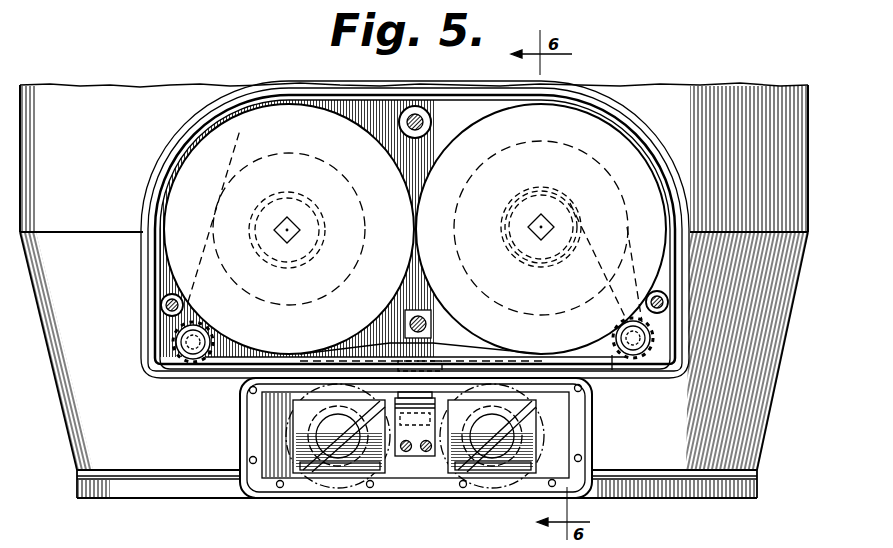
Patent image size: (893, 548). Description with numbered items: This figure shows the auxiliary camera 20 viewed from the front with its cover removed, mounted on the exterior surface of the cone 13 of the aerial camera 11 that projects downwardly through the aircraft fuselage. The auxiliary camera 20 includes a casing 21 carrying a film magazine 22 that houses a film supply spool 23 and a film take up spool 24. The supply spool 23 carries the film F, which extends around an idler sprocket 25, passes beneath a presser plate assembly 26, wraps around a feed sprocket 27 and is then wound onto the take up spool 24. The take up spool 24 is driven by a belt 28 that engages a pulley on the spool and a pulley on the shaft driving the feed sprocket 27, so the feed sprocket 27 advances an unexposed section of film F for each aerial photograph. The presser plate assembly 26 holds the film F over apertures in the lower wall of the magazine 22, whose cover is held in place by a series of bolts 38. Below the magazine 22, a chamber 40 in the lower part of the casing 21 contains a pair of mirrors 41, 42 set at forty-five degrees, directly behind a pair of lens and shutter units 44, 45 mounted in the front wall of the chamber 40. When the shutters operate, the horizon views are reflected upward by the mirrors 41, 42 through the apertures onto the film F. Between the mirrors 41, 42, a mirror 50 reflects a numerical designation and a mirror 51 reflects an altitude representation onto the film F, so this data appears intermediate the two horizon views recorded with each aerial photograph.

The aerial camera 11 is at (141, 92).
The cone 13 is at (760, 438).
The auxiliary camera 20 is at (392, 209).
The casing 21 is at (140, 290).
The film magazine 22 is at (464, 99).
The film supply spool 23 is at (280, 110).
The film take up spool 24 is at (562, 110).
The idler sprocket 25 is at (178, 350).
The presser plate assembly 26 is at (392, 344).
The feed sprocket 27 is at (640, 380).
The belt 28 is at (612, 378).
The bolts 38 is at (420, 114).
The chamber 40 is at (573, 428).
The mirror 41 is at (540, 437).
The mirror 42 is at (310, 434).
The lens and shutter unit 44 is at (530, 454).
The lens and shutter unit 45 is at (300, 456).
The mirror 50 is at (443, 368).
The mirror 51 is at (425, 440).
The film F is at (240, 356).